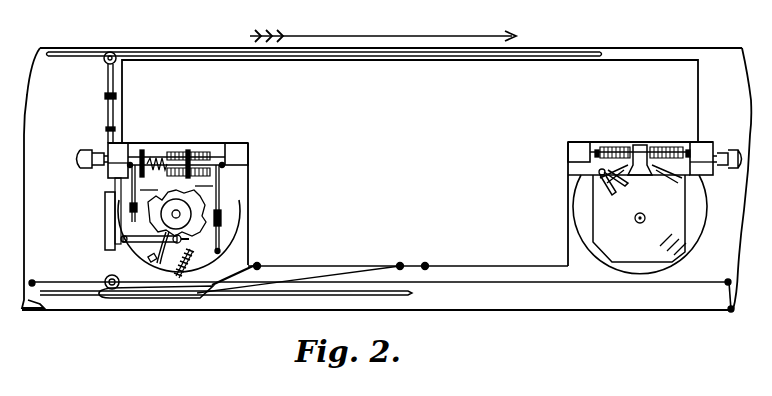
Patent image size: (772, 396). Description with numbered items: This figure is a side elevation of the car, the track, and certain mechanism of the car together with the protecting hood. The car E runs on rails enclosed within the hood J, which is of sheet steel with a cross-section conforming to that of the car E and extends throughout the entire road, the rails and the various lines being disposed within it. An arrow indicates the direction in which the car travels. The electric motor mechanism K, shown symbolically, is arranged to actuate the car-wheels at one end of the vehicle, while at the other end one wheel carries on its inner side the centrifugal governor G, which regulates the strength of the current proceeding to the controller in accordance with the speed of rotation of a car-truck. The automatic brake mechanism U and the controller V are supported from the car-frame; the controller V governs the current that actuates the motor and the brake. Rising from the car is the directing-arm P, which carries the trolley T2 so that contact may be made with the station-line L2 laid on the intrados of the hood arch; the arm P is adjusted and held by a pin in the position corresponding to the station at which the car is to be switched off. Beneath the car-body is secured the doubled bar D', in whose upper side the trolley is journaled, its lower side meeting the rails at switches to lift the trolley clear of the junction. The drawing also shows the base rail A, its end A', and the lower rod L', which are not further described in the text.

The station-line L2 is at (62, 62).
The trolley T2 is at (106, 70).
The directing-arm P is at (117, 96).
The car E is at (410, 101).
The hood J is at (702, 35).
The automatic brake mechanism U is at (100, 214).
The controller V is at (183, 209).
The centrifugal governor G is at (157, 255).
The base rail A is at (381, 287).
The base rail end A' is at (7, 324).
The lower rod L' is at (226, 312).
The doubled bar D' is at (382, 263).
The electric motor mechanism K is at (640, 221).